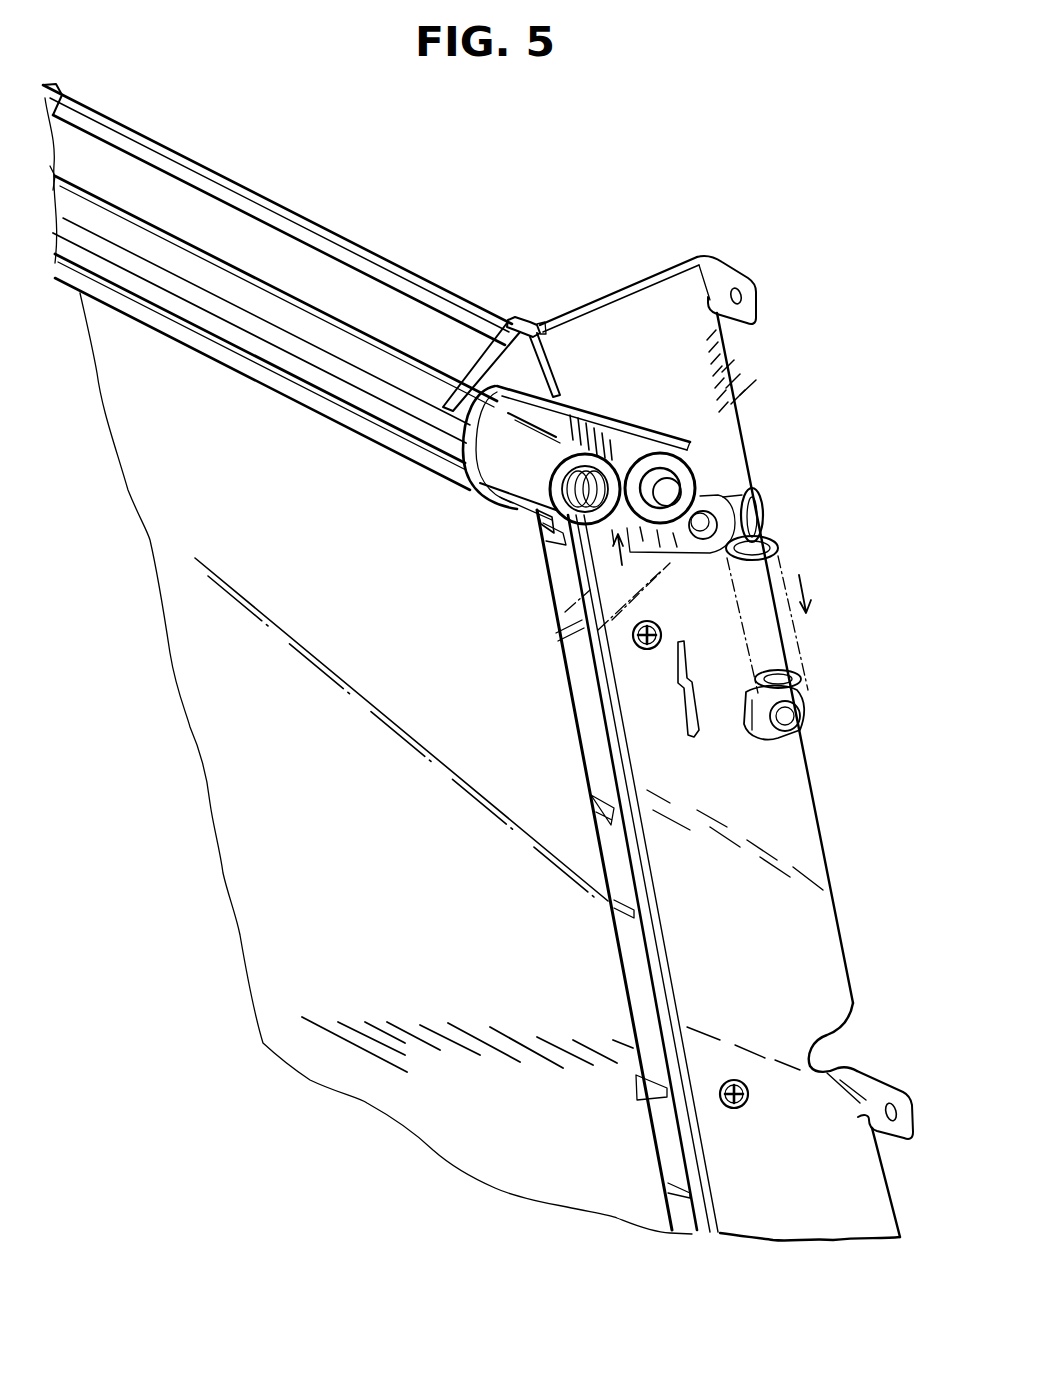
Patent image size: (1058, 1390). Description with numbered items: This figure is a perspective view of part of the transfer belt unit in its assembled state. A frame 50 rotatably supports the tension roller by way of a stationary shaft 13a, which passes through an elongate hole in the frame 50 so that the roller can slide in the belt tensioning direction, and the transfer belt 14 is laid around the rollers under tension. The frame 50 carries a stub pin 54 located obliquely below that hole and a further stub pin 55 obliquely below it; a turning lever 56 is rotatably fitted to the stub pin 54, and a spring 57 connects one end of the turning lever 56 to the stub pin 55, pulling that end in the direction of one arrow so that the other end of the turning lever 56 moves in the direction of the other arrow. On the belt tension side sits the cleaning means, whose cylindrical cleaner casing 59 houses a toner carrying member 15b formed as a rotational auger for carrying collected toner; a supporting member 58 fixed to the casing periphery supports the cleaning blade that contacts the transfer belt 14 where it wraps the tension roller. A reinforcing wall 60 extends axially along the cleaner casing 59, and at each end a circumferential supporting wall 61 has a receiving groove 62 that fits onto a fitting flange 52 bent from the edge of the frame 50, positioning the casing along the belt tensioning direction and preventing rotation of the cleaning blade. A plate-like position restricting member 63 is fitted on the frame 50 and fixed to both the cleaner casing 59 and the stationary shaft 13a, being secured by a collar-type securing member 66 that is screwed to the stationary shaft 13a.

The stationary shaft 13a is at (668, 492).
The transfer belt 14 is at (637, 990).
The toner carrying member 15b is at (542, 516).
The frame 50 is at (820, 897).
The fitting flange 52 is at (540, 322).
The stub pin 54 is at (703, 536).
The stub pin 55 is at (795, 721).
The turning lever 56 is at (758, 510).
The spring 57 is at (797, 639).
The supporting member 58 is at (153, 318).
The cleaner casing 59 is at (330, 390).
The reinforcing wall 60 is at (307, 228).
The supporting wall 61 is at (514, 318).
The receiving groove 62 is at (541, 330).
The position restricting member 63 is at (617, 427).
The securing member 66 is at (643, 452).